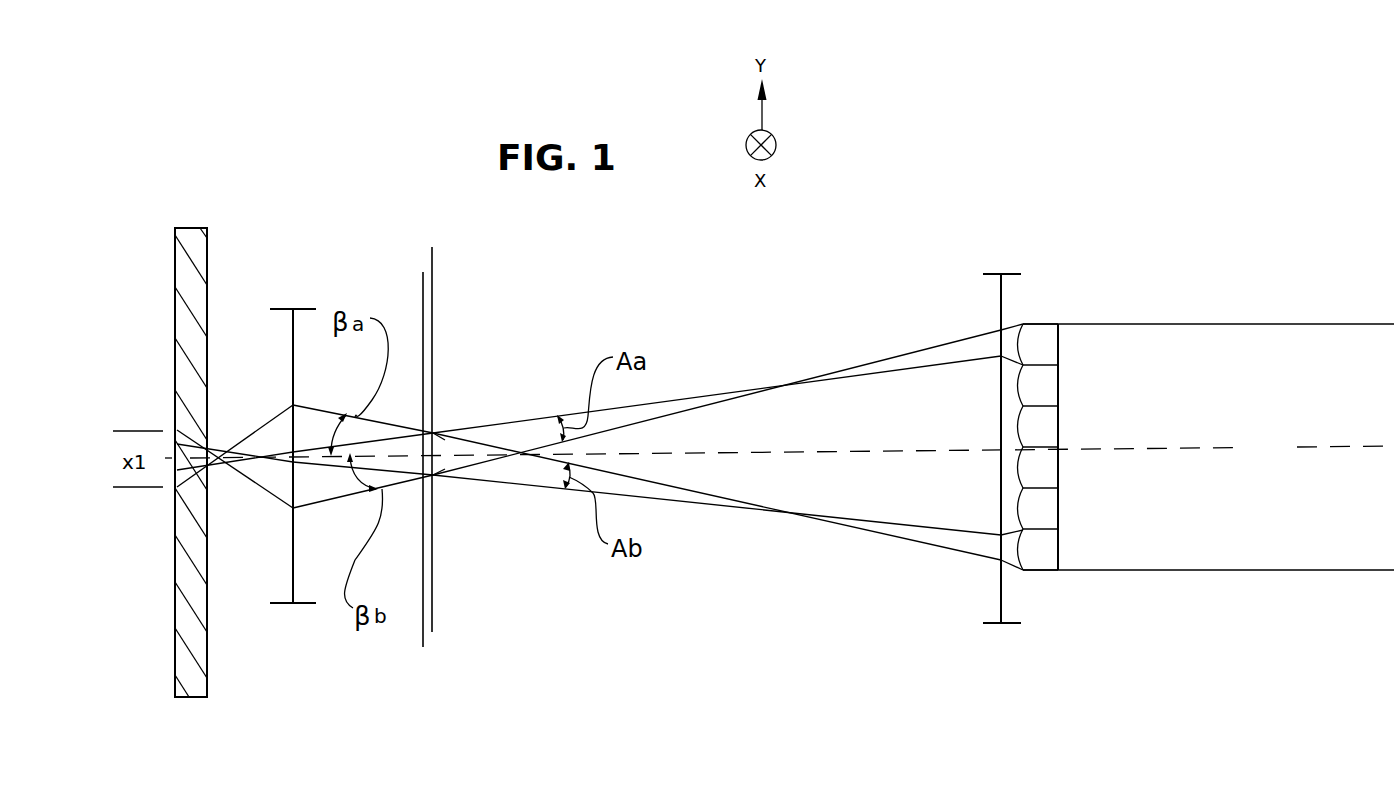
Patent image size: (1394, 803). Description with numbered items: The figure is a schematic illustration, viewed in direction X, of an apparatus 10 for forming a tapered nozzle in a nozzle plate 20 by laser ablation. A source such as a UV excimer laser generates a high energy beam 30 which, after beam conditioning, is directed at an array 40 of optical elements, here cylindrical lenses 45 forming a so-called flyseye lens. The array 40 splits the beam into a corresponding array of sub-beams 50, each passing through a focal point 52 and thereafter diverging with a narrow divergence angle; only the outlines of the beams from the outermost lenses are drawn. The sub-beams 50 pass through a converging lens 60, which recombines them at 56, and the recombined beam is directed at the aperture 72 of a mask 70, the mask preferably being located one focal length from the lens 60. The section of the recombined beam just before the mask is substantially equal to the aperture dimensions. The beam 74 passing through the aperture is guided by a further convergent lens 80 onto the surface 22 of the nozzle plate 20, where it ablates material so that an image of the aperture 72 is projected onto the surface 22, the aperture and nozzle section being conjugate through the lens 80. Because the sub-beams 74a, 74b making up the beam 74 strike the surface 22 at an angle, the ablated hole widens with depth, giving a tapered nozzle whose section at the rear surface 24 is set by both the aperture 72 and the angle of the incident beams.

The apparatus 10 is at (674, 722).
The nozzle plate 20 is at (200, 690).
The surface of the nozzle plate 22 is at (208, 613).
The rear surface 24 is at (176, 545).
The high energy beam 30 is at (1208, 447).
The array of optical elements 40 is at (1047, 309).
The cylindrical lens 45 is at (1043, 558).
The sub-beam 50 is at (948, 539).
The focal point 52 is at (811, 538).
The recombined beam 56 is at (508, 399).
The converging lens 60 is at (1017, 625).
The mask 70 is at (433, 607).
The aperture 72 is at (440, 462).
The recombined beam passing through the aperture 74 is at (415, 399).
The sub-beam 74a is at (327, 491).
The sub-beam 74b is at (308, 412).
The further convergent lens 80 is at (269, 309).